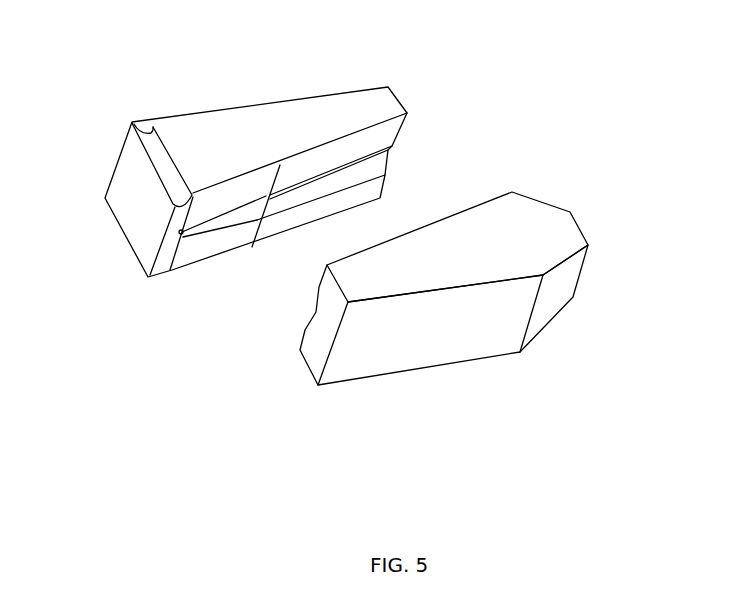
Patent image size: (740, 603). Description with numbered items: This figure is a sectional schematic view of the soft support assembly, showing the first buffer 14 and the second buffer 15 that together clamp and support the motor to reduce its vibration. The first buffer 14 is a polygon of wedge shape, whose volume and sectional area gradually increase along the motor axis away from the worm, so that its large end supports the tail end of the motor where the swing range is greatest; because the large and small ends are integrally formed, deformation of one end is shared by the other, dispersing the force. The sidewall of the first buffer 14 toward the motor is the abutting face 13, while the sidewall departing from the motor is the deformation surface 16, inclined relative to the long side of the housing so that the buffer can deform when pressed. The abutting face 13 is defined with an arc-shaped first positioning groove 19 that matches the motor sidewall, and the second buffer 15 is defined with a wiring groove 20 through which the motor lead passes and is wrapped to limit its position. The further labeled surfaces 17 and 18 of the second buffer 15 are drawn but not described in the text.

The abutting face 13 is at (255, 144).
The first buffer 14 is at (395, 306).
The second buffer 15 is at (262, 137).
The deformation surface 16 is at (555, 295).
The top face of lower body 17 is at (523, 230).
The front face of lower body 18 is at (375, 282).
The first positioning groove 19 is at (314, 318).
The wiring groove 20 is at (160, 162).